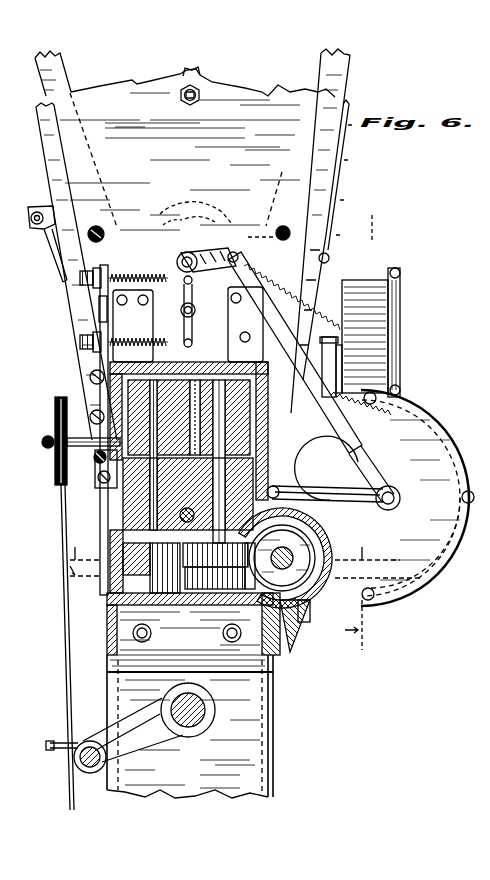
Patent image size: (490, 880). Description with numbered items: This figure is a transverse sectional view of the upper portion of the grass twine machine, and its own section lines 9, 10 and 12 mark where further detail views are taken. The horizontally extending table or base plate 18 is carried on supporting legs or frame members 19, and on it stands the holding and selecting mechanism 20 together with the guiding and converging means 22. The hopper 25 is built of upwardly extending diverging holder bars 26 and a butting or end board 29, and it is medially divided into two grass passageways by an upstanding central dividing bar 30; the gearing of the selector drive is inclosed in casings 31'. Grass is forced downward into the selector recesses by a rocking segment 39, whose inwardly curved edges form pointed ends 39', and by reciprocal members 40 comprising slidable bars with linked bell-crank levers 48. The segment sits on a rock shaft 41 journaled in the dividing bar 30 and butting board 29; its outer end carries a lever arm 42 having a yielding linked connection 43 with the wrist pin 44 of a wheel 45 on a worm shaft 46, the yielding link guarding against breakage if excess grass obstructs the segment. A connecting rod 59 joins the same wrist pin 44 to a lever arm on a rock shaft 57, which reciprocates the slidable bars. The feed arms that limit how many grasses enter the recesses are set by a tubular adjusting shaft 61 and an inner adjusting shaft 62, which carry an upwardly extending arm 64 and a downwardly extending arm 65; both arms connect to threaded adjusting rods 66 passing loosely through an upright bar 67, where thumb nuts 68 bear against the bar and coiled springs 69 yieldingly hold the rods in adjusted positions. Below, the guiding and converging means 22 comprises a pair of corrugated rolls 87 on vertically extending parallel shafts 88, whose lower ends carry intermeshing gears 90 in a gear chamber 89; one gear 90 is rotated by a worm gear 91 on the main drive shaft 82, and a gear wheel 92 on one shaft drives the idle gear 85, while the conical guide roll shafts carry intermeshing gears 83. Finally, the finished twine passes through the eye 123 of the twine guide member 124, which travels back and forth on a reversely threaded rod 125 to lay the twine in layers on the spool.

The section line 9— 9 is at (235, 550).
The section line 10— 10 is at (244, 578).
The section line 12— 12 is at (362, 435).
The table or base plate 18 is at (195, 376).
The supporting legs or frame members 19 is at (272, 718).
The holding and selecting mechanism 20 is at (340, 140).
The guiding and converging means 22 is at (128, 401).
The hopper 25 is at (271, 88).
The holder bar 26 is at (64, 80).
The butting or end board 29 is at (200, 90).
The central dividing bar 30 is at (197, 68).
The casings 31' is at (376, 332).
The rocking segment 39 is at (190, 205).
The pointed ends 39' is at (211, 212).
The reciprocal members 40 is at (37, 210).
The rock shaft 41 is at (178, 260).
The lever arm 42 is at (232, 251).
The yielding linked connection 43 is at (308, 323).
The wrist pin 44 is at (401, 497).
The wheel 45 is at (394, 506).
The worm shaft 46 is at (348, 488).
The bell-crank levers 48 is at (44, 229).
The rock shaft 57 is at (124, 505).
The connecting rod 59 is at (295, 488).
The tubular adjusting shaft 61 is at (194, 294).
The adjusting shaft 62 is at (195, 311).
The upwardly extending arm 64 is at (193, 281).
The downwardly extending arm 65 is at (185, 340).
The threaded adjusting rods 66 is at (80, 279).
The upright bar 67 is at (104, 310).
The thumb nuts 68 is at (96, 264).
The coiled springs 69 is at (148, 290).
The main drive shaft 82 is at (305, 590).
The intermeshing gears 83 is at (298, 640).
The idle gear 85 is at (242, 590).
The corrugated rolls 87 is at (102, 416).
The vertically extending parallel shafts 88 is at (205, 570).
The gear chamber 89 is at (116, 586).
The intermeshing gears 90 is at (224, 590).
The worm gear 91 is at (308, 622).
The gear wheel 92 is at (200, 585).
The eye 123 is at (50, 746).
The twine guide member 124 is at (200, 740).
The reversely threaded rod 125 is at (215, 714).